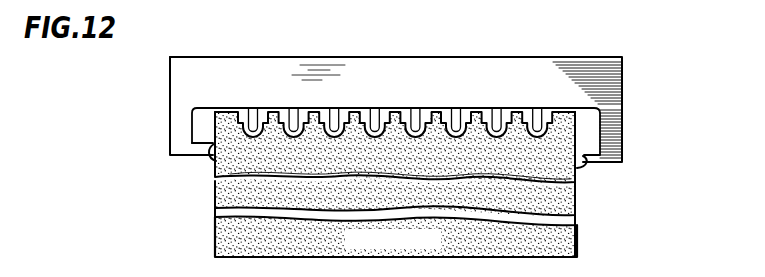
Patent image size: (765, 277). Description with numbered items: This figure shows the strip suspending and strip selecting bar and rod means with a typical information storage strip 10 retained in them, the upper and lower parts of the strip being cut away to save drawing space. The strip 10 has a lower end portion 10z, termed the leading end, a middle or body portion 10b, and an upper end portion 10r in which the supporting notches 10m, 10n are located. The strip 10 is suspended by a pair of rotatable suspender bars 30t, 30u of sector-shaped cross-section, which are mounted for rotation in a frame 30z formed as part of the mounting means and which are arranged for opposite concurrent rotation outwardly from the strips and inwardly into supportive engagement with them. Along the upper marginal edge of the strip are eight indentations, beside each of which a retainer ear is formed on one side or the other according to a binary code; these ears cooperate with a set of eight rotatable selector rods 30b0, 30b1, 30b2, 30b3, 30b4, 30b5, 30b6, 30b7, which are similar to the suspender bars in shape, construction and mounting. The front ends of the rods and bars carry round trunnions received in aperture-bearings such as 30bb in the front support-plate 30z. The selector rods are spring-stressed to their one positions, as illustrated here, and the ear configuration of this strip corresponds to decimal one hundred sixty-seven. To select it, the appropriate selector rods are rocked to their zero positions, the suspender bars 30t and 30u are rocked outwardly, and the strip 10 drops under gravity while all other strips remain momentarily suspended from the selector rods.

The strip 10 is at (396, 142).
The supporting notch 10m is at (350, 113).
The upper end portion 10r is at (218, 188).
The middle or body portion 10b is at (213, 208).
The lower end portion 10z is at (213, 241).
The supporting notch 10n is at (578, 178).
The frame 30z is at (610, 90).
The suspender bar 30t is at (212, 159).
The suspender bar 30u is at (584, 167).
The aperture-bearing 30bb is at (294, 118).
The selector rod 30b0 is at (533, 112).
The selector rod 30b1 is at (513, 112).
The selector rod 30b2 is at (451, 112).
The selector rod 30b3 is at (413, 112).
The selector rod 30b4 is at (390, 112).
The selector rod 30b5 is at (350, 112).
The selector rod 30b6 is at (310, 112).
The selector rod 30b7 is at (271, 112).